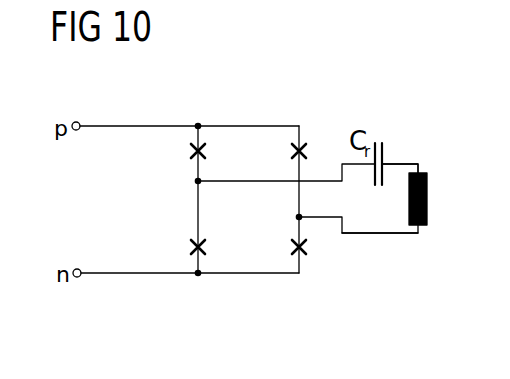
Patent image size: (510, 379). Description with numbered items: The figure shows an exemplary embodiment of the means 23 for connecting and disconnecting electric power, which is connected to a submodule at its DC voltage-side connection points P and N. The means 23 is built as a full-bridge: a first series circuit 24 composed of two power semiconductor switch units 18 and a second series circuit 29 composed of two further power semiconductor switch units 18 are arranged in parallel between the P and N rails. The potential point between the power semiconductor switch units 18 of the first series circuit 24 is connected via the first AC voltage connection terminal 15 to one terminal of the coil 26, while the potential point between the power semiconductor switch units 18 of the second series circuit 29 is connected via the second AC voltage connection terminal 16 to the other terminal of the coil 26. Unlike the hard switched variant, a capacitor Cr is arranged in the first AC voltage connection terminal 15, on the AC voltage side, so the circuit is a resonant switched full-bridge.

The first AC voltage connection terminal 15 is at (400, 163).
The second AC voltage connection terminal 16 is at (382, 236).
The power semiconductor switch units 18 is at (191, 150).
The means for connecting and disconnecting electric power 23 is at (350, 100).
The first series circuit 24 is at (145, 256).
The coil 26 is at (428, 198).
The second series circuit 29 is at (264, 146).